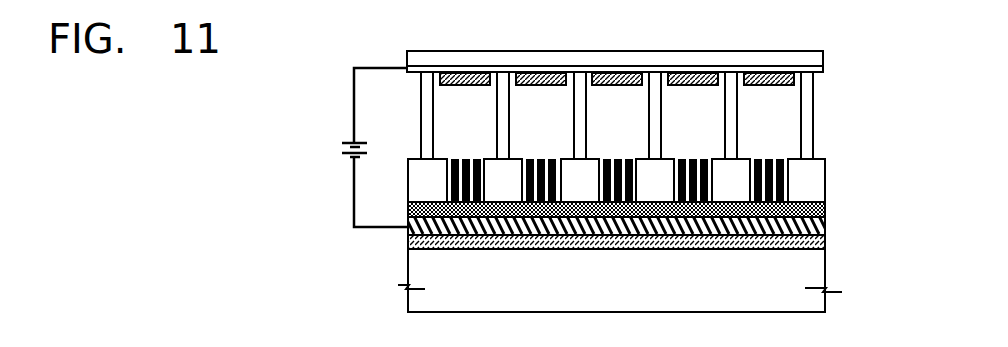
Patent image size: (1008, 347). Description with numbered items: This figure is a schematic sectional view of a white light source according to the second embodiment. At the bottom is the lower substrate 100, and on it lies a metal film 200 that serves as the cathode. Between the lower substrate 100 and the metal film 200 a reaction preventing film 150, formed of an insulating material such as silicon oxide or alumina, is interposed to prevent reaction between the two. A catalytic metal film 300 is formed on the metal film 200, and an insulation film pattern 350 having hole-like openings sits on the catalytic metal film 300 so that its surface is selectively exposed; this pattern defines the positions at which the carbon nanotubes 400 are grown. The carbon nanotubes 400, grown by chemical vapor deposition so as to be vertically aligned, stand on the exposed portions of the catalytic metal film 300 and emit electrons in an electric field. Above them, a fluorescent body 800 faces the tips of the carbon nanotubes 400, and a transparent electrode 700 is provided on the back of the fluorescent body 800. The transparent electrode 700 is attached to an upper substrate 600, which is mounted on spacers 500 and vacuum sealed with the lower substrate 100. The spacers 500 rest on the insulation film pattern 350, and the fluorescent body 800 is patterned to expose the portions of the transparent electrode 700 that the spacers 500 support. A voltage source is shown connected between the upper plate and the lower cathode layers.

The lower substrate 100 is at (815, 268).
The reaction preventing film 150 is at (825, 243).
The metal film 200 is at (820, 226).
The catalytic metal film 300 is at (825, 204).
The insulation film pattern 350 is at (815, 184).
The carbon nanotubes 400 is at (768, 159).
The spacers 500 is at (813, 140).
The upper substrate 600 is at (823, 52).
The transparent electrode 700 is at (823, 66).
The fluorescent body 800 is at (795, 79).